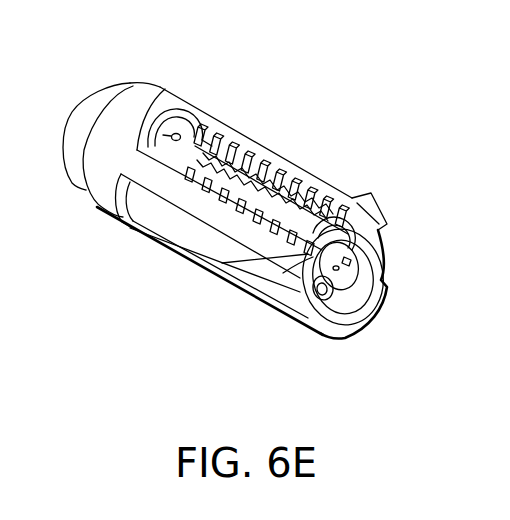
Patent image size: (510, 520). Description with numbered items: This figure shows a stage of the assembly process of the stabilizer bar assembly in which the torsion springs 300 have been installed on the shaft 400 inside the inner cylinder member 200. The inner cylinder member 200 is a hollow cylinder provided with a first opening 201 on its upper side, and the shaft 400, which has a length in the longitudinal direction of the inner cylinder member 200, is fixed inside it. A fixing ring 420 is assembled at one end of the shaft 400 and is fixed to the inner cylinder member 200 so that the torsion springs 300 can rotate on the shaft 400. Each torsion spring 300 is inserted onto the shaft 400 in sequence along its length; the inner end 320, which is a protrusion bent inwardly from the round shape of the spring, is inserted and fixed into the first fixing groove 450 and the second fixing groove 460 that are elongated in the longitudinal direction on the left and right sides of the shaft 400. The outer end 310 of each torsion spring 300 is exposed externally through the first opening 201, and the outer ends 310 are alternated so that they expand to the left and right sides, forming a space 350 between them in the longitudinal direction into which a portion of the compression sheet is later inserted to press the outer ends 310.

The inner cylinder member 200 is at (108, 213).
The first opening 201 is at (360, 210).
The torsion spring 300 is at (248, 130).
The outer end 310 is at (222, 263).
The inner end 320 is at (283, 273).
The space 350 is at (290, 172).
The shaft 400 is at (350, 290).
The fixing ring 420 is at (162, 115).
The first fixing groove 450 is at (318, 300).
The second fixing groove 460 is at (381, 268).